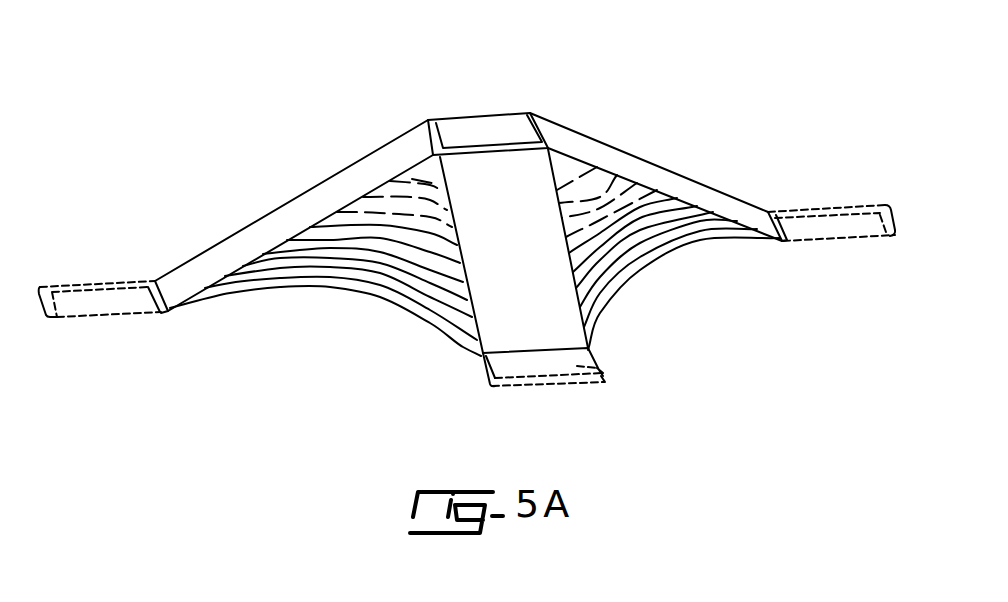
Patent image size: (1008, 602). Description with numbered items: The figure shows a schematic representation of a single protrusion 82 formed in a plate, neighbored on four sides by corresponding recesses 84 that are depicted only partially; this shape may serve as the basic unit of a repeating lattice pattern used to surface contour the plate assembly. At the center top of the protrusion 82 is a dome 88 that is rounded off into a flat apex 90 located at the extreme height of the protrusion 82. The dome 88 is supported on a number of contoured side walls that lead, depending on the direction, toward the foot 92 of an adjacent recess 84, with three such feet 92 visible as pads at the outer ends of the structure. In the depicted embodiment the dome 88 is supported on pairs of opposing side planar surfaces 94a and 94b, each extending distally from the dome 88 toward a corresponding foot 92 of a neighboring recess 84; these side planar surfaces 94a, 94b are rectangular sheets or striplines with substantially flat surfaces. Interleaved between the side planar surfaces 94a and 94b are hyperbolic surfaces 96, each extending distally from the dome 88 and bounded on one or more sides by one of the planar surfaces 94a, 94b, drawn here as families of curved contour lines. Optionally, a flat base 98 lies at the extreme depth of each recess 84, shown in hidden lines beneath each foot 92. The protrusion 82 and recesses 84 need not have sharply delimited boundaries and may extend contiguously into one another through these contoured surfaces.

The protrusion 82 is at (264, 60).
The recess 84 is at (153, 340).
The dome 88 is at (519, 107).
The flat apex 90 is at (518, 132).
The foot 92 is at (467, 298).
The side planar surface 94a is at (283, 213).
The side planar surface 94b is at (498, 262).
The hyperbolic surface 96 is at (368, 252).
The flat base 98 is at (108, 303).